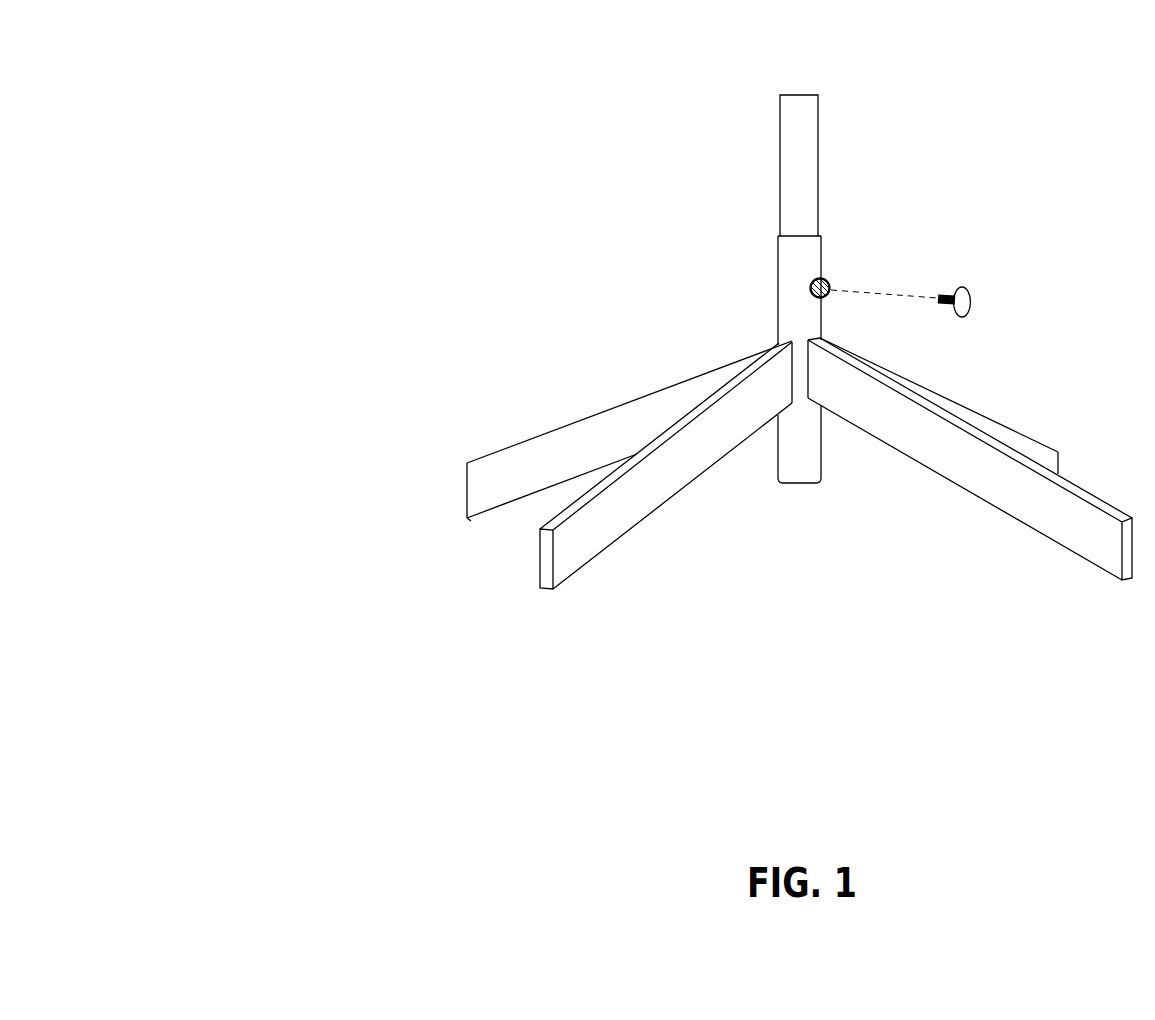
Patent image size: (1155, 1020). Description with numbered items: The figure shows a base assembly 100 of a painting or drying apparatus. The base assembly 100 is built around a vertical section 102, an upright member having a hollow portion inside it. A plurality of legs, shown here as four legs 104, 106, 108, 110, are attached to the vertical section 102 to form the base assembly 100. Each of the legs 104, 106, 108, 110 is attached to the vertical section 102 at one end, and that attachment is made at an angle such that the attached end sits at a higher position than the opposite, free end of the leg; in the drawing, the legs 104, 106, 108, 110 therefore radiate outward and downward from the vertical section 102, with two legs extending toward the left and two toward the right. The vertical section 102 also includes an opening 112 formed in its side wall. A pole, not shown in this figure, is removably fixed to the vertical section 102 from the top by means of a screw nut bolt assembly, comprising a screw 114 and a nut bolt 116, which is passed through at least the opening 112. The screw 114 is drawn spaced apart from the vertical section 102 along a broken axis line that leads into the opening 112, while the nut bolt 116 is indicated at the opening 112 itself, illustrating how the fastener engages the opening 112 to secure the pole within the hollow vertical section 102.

The base assembly 100 is at (322, 141).
The vertical section 102 is at (777, 286).
The leg 104 is at (557, 427).
The leg 106 is at (643, 517).
The leg 108 is at (990, 500).
The leg 110 is at (986, 418).
The opening 112 is at (825, 297).
The screw 114 is at (970, 288).
The nut bolt 116 is at (824, 282).